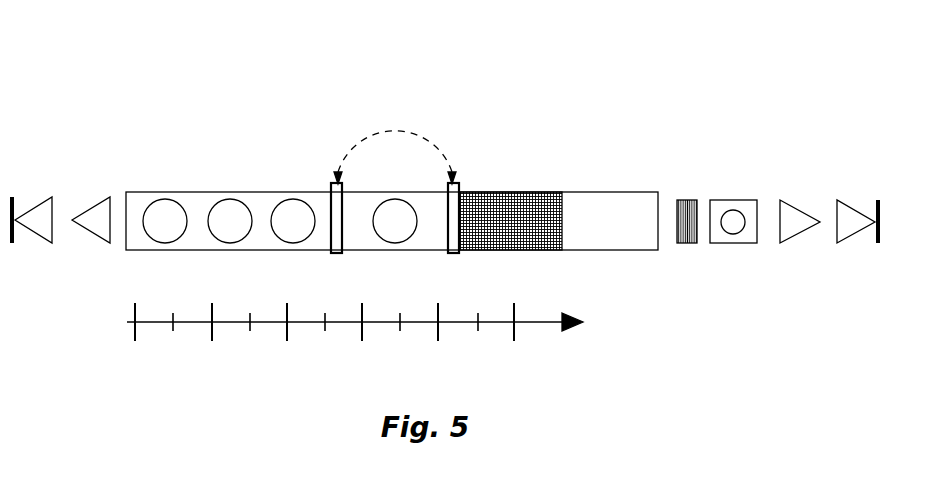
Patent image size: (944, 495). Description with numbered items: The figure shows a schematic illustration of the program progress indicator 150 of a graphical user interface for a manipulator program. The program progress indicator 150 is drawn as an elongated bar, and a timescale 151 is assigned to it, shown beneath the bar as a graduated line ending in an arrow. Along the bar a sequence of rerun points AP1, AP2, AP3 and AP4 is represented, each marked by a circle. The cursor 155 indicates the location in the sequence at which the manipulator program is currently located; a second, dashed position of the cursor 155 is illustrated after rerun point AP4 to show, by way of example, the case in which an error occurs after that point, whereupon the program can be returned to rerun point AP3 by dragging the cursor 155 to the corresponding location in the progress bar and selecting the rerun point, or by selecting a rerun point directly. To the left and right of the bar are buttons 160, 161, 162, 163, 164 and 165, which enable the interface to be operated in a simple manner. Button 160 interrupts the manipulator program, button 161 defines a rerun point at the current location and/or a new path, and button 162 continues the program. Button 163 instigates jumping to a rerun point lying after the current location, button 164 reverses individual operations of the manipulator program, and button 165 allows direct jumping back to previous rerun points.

The program progress indicator 150 is at (36, 36).
The timescale 151 is at (584, 324).
The cursor 155 is at (333, 253).
The button 160 is at (683, 198).
The button 161 is at (732, 198).
The button 162 is at (783, 198).
The button 163 is at (843, 198).
The button 164 is at (100, 197).
The button 165 is at (38, 197).
The rerun point AP1 is at (164, 196).
The rerun point AP2 is at (228, 196).
The rerun point AP3 is at (338, 173).
The rerun point AP4 is at (397, 192).